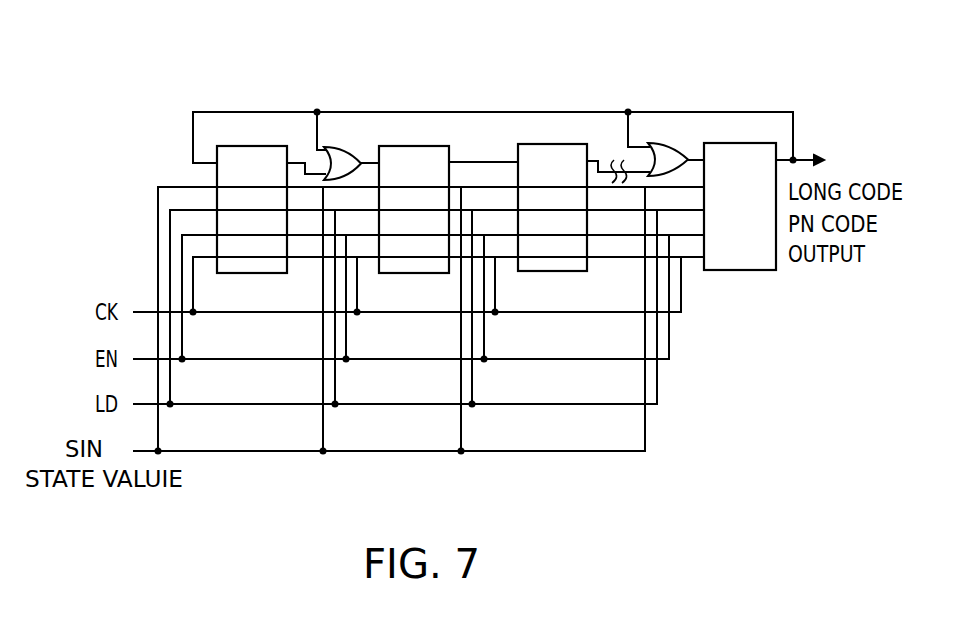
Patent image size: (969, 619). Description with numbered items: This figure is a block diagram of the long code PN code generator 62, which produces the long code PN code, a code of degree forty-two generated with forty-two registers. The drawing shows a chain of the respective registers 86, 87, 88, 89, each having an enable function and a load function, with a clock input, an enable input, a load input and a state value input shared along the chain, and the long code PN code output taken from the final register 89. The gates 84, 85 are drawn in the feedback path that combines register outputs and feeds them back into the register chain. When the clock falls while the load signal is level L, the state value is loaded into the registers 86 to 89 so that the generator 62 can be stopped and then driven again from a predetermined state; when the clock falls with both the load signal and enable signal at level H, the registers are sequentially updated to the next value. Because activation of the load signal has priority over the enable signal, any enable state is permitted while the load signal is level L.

The long code PN code generator 62 is at (818, 73).
The exclusive-OR gate 84 is at (357, 127).
The exclusive-OR gate 85 is at (668, 143).
The register 86 is at (265, 273).
The register 87 is at (397, 273).
The register 88 is at (562, 271).
The register 89 is at (760, 270).